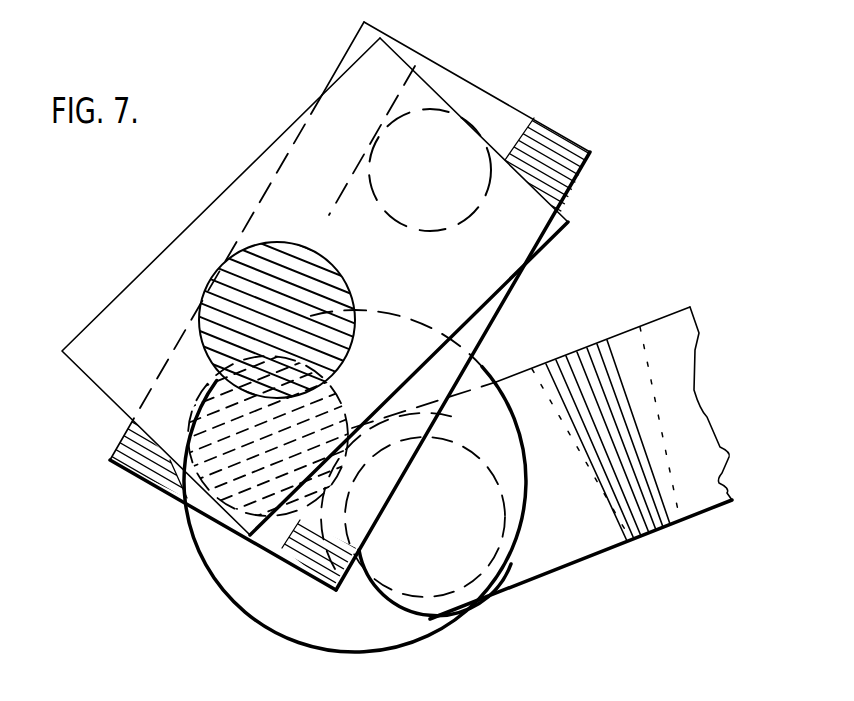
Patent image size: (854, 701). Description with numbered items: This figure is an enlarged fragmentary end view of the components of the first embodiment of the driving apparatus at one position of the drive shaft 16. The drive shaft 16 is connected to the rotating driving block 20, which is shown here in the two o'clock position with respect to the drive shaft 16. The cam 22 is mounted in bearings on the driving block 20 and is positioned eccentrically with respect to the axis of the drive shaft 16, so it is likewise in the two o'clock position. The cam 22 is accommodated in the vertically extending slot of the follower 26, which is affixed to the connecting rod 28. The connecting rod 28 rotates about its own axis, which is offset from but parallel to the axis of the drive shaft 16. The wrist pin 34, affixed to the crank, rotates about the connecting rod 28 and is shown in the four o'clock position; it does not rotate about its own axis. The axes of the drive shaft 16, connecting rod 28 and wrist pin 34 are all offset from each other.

The drive shaft 16 is at (257, 243).
The driving block 20 is at (152, 258).
The cam 22 is at (451, 66).
The follower 26 is at (535, 700).
The connecting rod 28 is at (176, 507).
The wrist pin 34 is at (413, 595).